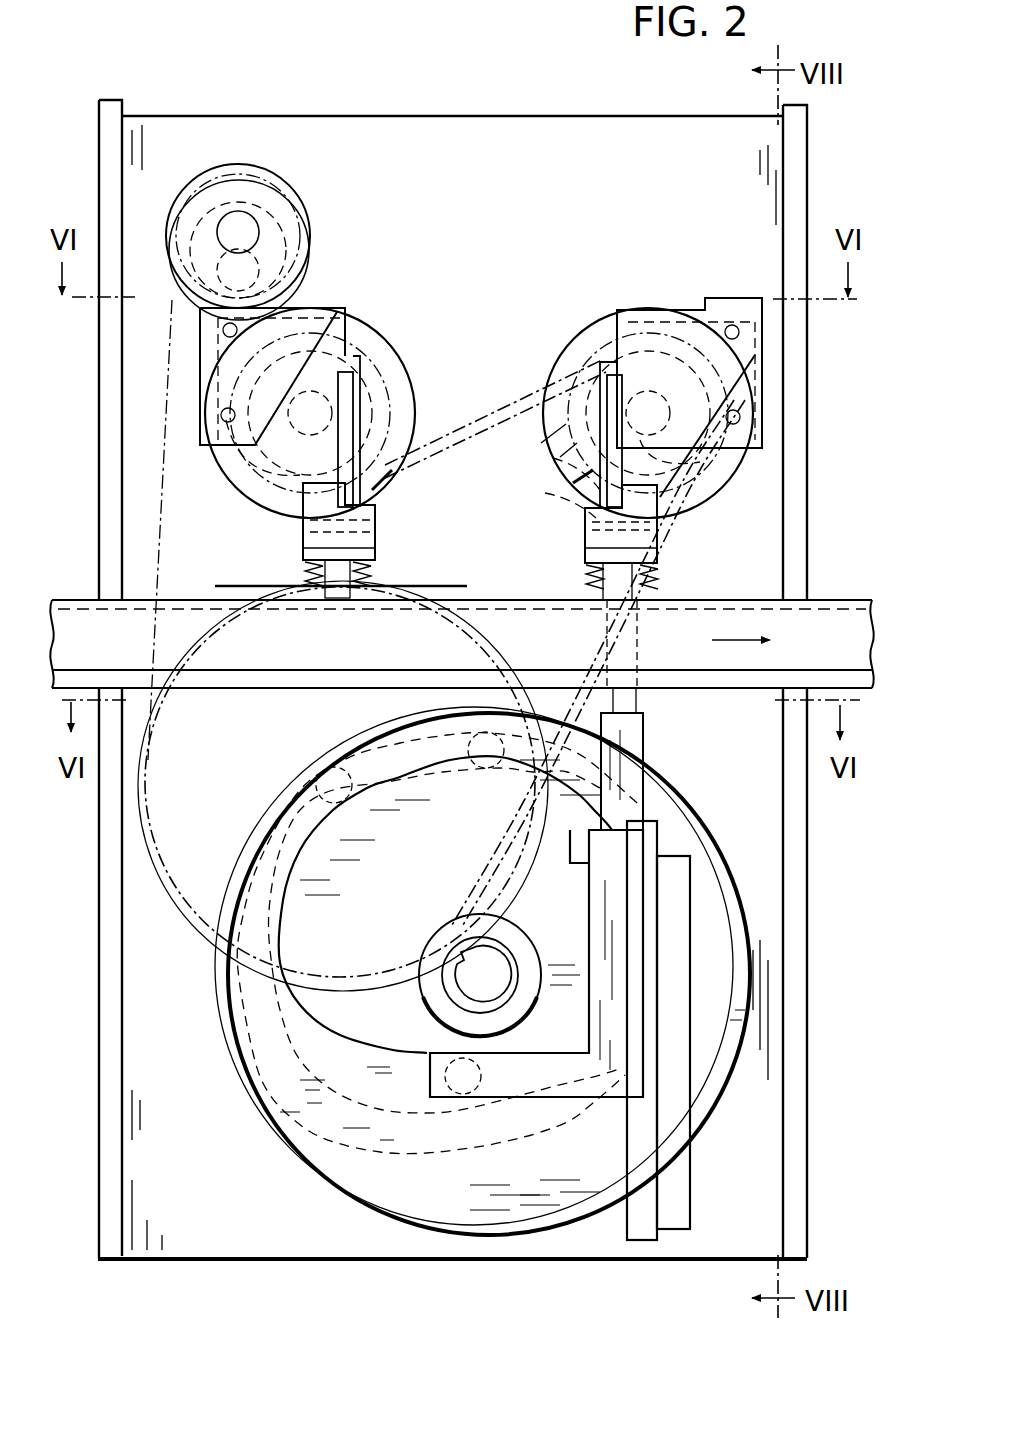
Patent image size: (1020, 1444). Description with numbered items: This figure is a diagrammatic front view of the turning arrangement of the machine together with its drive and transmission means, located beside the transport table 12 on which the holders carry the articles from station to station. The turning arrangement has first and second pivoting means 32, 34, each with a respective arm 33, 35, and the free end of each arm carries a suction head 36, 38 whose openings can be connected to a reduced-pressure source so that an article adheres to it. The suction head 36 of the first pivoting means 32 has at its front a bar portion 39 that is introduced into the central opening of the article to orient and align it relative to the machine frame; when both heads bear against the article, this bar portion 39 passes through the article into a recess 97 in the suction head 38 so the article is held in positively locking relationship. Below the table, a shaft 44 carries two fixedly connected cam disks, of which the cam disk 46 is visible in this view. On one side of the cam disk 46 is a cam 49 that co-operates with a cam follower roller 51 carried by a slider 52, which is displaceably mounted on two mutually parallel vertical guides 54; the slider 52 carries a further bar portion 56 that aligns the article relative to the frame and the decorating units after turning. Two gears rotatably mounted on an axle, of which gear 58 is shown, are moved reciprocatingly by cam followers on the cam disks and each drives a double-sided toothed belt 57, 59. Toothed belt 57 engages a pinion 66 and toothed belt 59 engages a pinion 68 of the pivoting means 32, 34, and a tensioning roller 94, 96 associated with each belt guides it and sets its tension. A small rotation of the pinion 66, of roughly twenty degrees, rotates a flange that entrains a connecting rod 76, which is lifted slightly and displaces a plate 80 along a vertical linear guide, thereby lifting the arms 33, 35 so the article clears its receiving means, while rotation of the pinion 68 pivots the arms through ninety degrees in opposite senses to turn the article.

The table 12 is at (820, 620).
The first pivoting means 32 is at (390, 322).
The arm 33 is at (352, 394).
The second pivoting means 34 is at (568, 315).
The arm 35 is at (606, 392).
The suction head 36 is at (380, 556).
The suction head 38 is at (576, 557).
The bar portion 39 is at (336, 597).
The shaft 44 is at (345, 792).
The cam disk 46 is at (278, 1155).
The cam 49 is at (380, 1090).
The cam follower roller 51 is at (457, 1084).
The slider 52 is at (612, 895).
The vertical guides 54 is at (678, 1190).
The bar portion 56 is at (640, 705).
The toothed belt 57 is at (495, 425).
The gear 58 is at (186, 915).
The toothed belt 59 is at (512, 420).
The pinion 66 is at (548, 483).
The pinion 68 is at (540, 458).
The connecting rod 76 is at (206, 450).
The plate 80 is at (328, 313).
The tensioning roller 94 is at (298, 198).
The tensioning roller 96 is at (165, 283).
The recess 97 is at (627, 573).